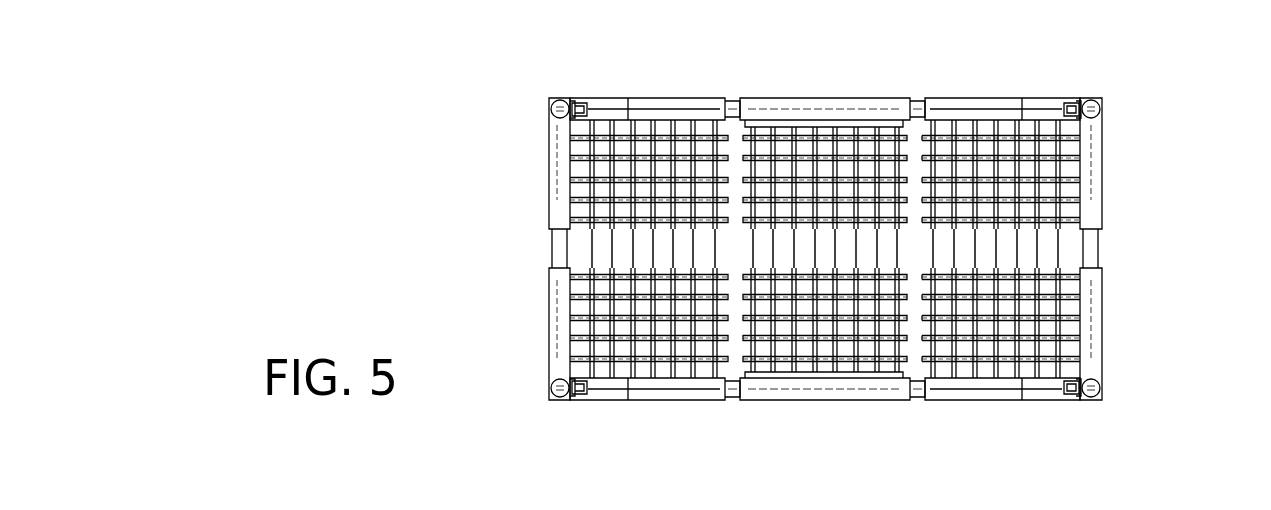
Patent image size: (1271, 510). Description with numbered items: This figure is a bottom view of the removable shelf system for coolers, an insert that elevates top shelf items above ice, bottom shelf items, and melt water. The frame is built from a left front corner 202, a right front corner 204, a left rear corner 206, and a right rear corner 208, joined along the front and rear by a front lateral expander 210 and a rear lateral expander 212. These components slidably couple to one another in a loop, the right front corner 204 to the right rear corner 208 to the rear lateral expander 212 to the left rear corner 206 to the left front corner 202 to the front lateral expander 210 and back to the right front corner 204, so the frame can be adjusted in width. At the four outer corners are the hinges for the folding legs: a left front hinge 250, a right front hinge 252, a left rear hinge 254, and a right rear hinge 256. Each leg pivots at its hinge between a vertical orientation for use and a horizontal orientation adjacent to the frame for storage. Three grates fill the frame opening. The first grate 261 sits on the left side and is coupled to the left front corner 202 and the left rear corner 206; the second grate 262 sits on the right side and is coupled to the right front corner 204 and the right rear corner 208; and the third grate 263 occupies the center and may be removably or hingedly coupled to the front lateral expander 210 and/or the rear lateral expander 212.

The left front corner 202 is at (548, 143).
The right front corner 204 is at (1100, 147).
The left rear corner 206 is at (553, 318).
The right rear corner 208 is at (1097, 345).
The front lateral expander 210 is at (780, 106).
The rear lateral expander 212 is at (798, 393).
The left front hinge 250 is at (582, 104).
The right front hinge 252 is at (1070, 106).
The left rear hinge 254 is at (618, 425).
The right rear hinge 256 is at (1072, 393).
The first grate 261 is at (593, 192).
The second grate 262 is at (1038, 193).
The third grate 263 is at (793, 338).